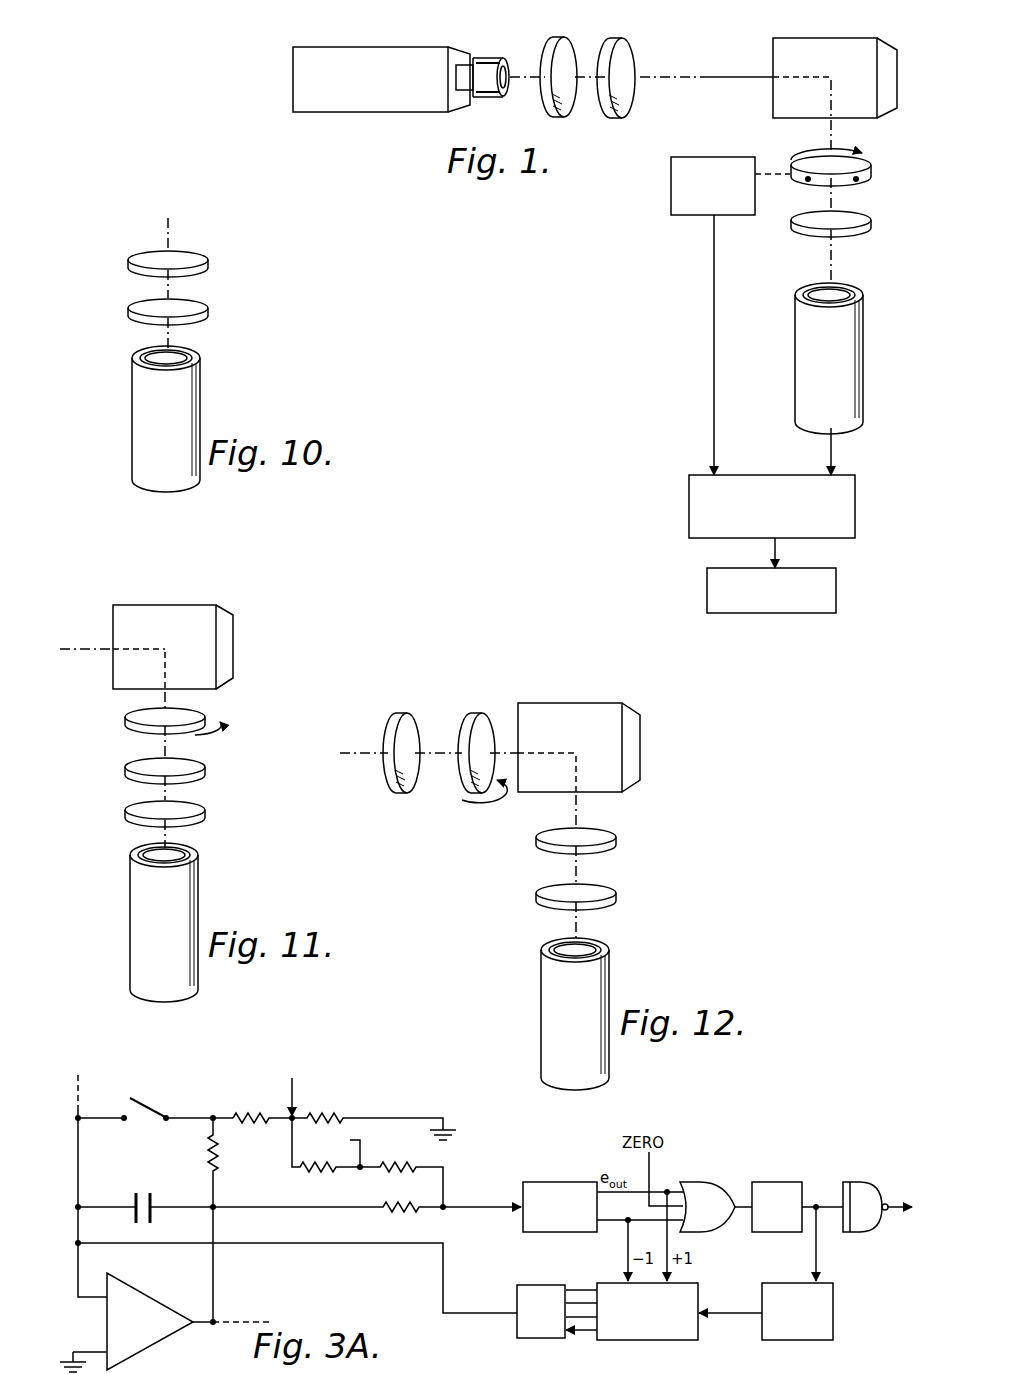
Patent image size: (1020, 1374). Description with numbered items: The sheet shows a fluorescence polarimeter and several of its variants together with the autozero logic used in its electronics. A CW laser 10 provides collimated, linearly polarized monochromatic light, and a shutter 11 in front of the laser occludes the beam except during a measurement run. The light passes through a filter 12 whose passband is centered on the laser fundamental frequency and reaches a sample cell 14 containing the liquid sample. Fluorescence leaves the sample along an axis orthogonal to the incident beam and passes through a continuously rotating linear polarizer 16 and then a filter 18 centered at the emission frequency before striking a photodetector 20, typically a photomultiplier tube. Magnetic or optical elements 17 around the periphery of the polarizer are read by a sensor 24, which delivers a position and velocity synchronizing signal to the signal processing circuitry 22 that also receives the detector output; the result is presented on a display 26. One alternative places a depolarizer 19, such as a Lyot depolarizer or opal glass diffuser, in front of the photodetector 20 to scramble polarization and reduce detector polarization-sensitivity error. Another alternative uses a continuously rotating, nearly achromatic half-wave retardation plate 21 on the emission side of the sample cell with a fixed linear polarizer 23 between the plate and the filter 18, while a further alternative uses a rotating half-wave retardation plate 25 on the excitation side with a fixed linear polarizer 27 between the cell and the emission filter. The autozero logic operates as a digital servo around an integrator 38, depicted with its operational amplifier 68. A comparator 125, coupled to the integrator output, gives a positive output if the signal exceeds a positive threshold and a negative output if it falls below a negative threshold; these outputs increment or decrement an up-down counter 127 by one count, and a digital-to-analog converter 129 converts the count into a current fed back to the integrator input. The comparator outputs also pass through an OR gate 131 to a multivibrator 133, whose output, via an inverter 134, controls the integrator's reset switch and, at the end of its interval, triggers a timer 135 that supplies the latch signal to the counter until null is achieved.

In FIG. 1, the CW laser 10 is at (438, 62).
In FIG. 1, the shutter 11 is at (560, 50).
In FIG. 1, the filter 12 is at (621, 48).
In FIG. 12, the filter 12 is at (403, 725).
In FIG. 1, the sample cell 14 is at (786, 57).
In FIG. 11, the sample cell 14 is at (200, 604).
In FIG. 12, the sample cell 14 is at (612, 703).
In FIG. 1, the continuously rotating linear polarizer 16 is at (862, 165).
In FIG. 1, the magnetic or optical elements 17 is at (810, 182).
In FIG. 1, the filter 18 is at (850, 228).
In FIG. 10, the filter 18 is at (186, 262).
In FIG. 11, the filter 18 is at (200, 813).
In FIG. 12, the filter 18 is at (600, 894).
In FIG. 10, the depolarizer 19 is at (178, 308).
In FIG. 1, the photodetector 20 is at (850, 316).
In FIG. 10, the photodetector 20 is at (182, 384).
In FIG. 11, the photodetector 20 is at (190, 886).
In FIG. 12, the photodetector 20 is at (595, 988).
In FIG. 11, the half-wave retardation plate 21 is at (195, 712).
In FIG. 1, the signal processing circuitry 22 is at (850, 508).
In FIG. 11, the fixed linear polarizer 23 is at (190, 770).
In FIG. 1, the sensor 24 is at (697, 157).
In FIG. 12, the half-wave retardation plate 25 is at (478, 725).
In FIG. 1, the display 26 is at (838, 592).
In FIG. 12, the fixed linear polarizer 27 is at (610, 841).
In FIG. 3A, the integrator 38 is at (93, 1318).
In FIG. 3A, the integrator amplifier 68 is at (150, 1302).
In FIG. 3A, the comparator 125 is at (510, 1233).
In FIG. 3A, the up-down counter 127 is at (690, 1341).
In FIG. 3A, the digital-to-analog converter 129 is at (540, 1339).
In FIG. 3A, the OR gate 131 is at (710, 1183).
In FIG. 3A, the multivibrator 133 is at (781, 1182).
In FIG. 3A, the inverter 134 is at (865, 1182).
In FIG. 3A, the timer 135 is at (775, 1283).